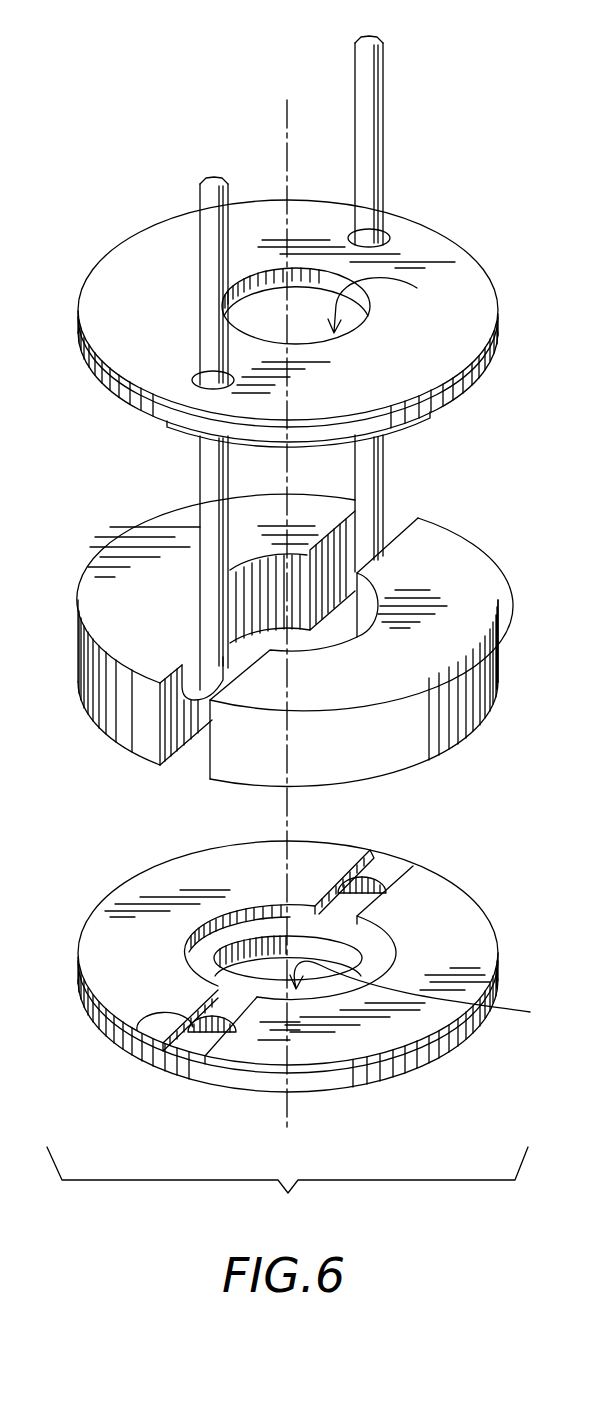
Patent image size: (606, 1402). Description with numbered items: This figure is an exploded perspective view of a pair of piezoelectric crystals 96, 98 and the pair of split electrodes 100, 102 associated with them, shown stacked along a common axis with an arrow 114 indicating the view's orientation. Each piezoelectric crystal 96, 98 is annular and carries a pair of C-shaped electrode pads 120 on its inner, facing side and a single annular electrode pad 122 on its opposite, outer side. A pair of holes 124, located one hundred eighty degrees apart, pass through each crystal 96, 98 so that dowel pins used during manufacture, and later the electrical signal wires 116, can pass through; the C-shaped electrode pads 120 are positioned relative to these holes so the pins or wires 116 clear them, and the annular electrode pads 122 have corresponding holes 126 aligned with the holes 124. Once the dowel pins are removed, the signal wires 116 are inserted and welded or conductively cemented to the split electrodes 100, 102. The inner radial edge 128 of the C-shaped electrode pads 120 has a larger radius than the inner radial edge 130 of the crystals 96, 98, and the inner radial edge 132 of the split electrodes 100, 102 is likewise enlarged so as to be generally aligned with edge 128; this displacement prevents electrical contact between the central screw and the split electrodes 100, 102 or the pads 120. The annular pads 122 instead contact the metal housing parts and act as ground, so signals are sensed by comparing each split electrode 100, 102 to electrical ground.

The piezoelectric crystal 96 is at (442, 395).
The piezoelectric crystal 98 is at (370, 1065).
The split electrode 100 is at (135, 712).
The split electrode 102 is at (425, 712).
The direction of rotation arrow 114 is at (436, 648).
The electrical signal wires 116 is at (213, 178).
The C-shaped electrode pads 120 is at (167, 420).
The annular electrode pad 122 is at (137, 280).
The holes 124 is at (377, 883).
The holes 126 is at (233, 378).
The inner radial edge 128 is at (305, 902).
The inner radial edge 130 is at (250, 930).
The inner radial edge 132 is at (243, 607).